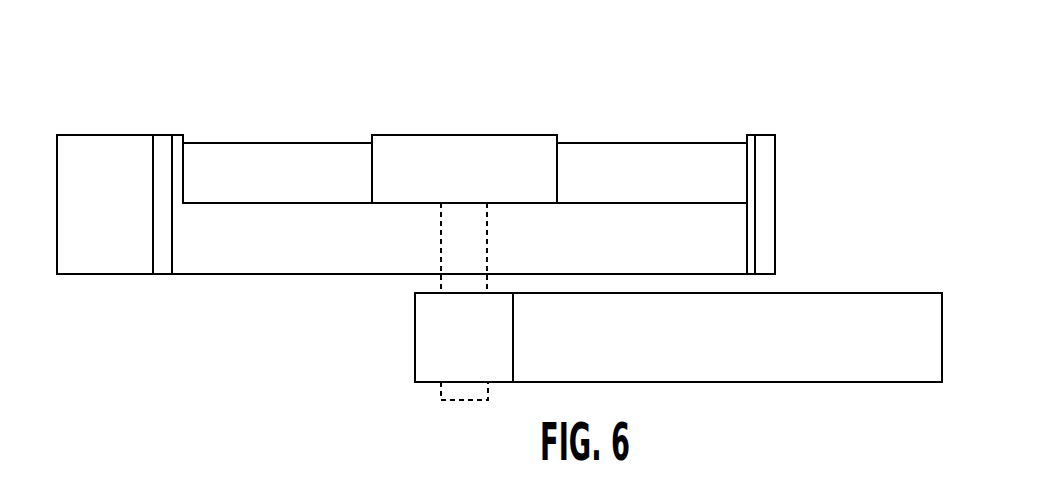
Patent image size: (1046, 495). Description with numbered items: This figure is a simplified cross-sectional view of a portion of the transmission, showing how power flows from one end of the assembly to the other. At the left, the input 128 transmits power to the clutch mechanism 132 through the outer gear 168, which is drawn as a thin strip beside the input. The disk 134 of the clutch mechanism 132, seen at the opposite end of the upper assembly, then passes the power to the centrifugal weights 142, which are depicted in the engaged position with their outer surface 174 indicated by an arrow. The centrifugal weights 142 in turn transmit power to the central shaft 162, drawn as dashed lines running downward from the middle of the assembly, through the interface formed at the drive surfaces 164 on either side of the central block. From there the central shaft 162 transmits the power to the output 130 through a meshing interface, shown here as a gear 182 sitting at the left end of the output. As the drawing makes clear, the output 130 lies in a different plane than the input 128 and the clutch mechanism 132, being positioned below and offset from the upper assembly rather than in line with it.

The input 128 is at (102, 170).
The output 130 is at (843, 313).
The clutch mechanism 132 is at (708, 63).
The disk 134 is at (732, 233).
The centrifugal weights 142 is at (310, 158).
The central shaft 162 is at (448, 253).
The drive surfaces 164 is at (372, 182).
The outer gear 168 is at (167, 153).
The outer surface 174 is at (188, 172).
The gear 182 is at (437, 353).